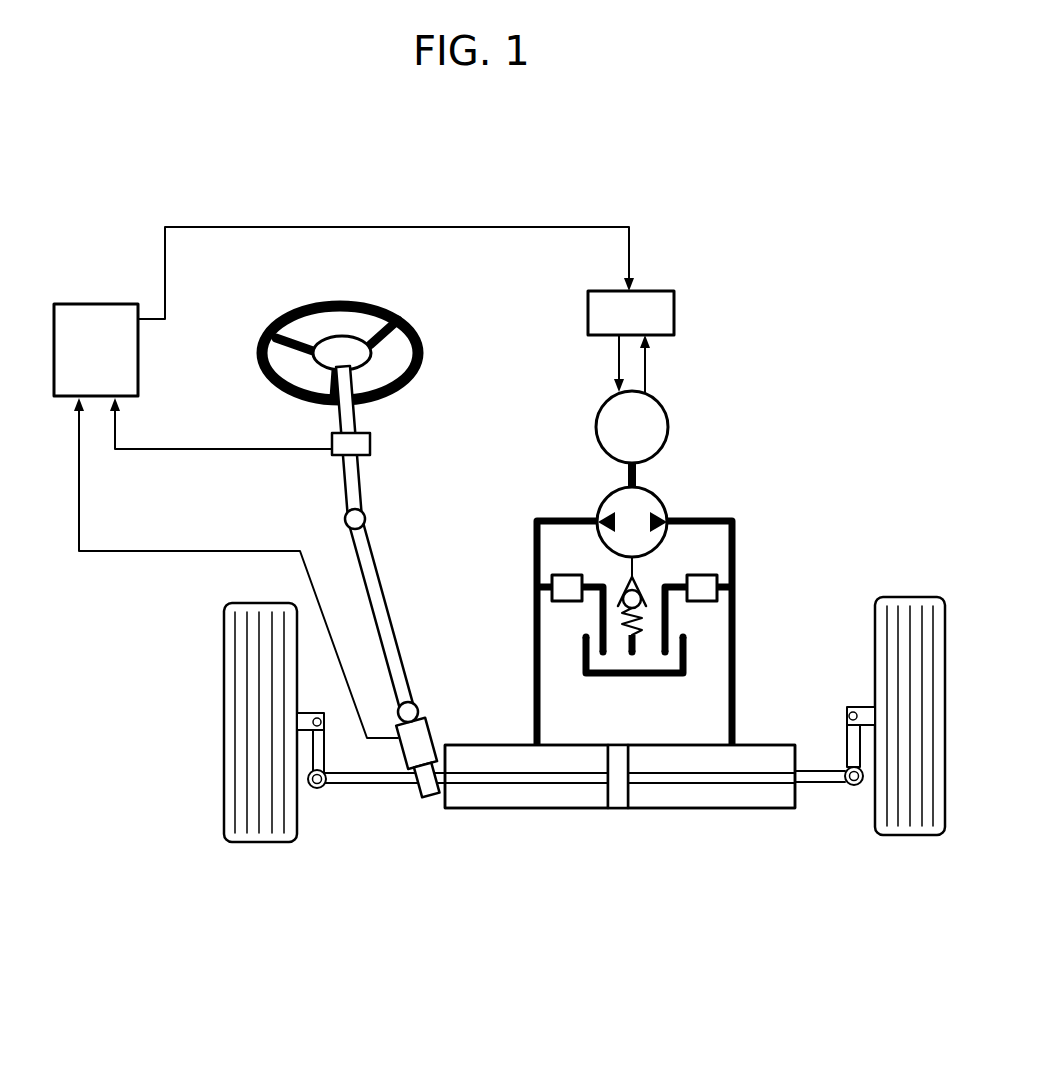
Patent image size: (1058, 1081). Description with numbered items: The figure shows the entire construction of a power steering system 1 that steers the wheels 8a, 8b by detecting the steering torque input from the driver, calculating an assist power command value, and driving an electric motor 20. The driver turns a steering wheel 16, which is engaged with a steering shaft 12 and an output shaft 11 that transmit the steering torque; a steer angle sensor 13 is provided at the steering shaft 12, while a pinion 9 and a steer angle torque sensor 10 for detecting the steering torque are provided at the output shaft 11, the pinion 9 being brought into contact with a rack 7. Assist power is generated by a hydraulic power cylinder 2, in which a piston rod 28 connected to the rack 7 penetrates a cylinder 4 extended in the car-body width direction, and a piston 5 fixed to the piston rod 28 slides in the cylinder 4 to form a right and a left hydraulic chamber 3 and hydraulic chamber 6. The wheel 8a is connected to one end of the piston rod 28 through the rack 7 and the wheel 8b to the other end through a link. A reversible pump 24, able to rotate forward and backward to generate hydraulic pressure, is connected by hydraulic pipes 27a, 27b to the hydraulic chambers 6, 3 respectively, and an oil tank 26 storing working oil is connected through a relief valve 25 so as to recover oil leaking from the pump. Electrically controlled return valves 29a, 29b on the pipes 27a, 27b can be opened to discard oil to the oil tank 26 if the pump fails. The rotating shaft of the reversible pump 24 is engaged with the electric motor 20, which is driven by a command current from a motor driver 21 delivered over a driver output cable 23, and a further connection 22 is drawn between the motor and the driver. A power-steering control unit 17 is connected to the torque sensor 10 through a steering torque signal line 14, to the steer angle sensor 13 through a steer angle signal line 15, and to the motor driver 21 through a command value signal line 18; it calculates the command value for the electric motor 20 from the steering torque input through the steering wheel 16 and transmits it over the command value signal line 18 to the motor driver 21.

The power steering system 1 is at (836, 302).
The hydraulic power cylinder 2 is at (740, 820).
The hydraulic chamber 3 is at (773, 800).
The cylinder 4 is at (662, 810).
The piston 5 is at (618, 800).
The hydraulic chamber 6 is at (512, 800).
The rack 7 is at (370, 785).
The wheel 8a is at (915, 838).
The wheel 8b is at (265, 845).
The pinion 9 is at (428, 792).
The steer angle torque sensor 10 is at (424, 735).
The output shaft 11 is at (383, 600).
The steering shaft 12 is at (358, 489).
The steer angle sensor 13 is at (372, 440).
The steering torque signal line 14 is at (118, 553).
The steer angle signal line 15 is at (232, 452).
The steering wheel 16 is at (330, 303).
The power-steering control unit 17 is at (95, 303).
The command value signal line 18 is at (476, 226).
The electric motor 20 is at (660, 428).
The motor driver 21 is at (660, 315).
The motor feedback line 22 is at (648, 366).
The driver output cable 23 is at (614, 366).
The reversible pump 24 is at (644, 500).
The relief valve 25 is at (641, 578).
The oil tank 26 is at (645, 680).
The hydraulic pipe 27a is at (533, 542).
The hydraulic pipe 27b is at (737, 660).
The piston rod 28 is at (827, 786).
The return valve 29a is at (566, 597).
The return valve 29b is at (700, 585).